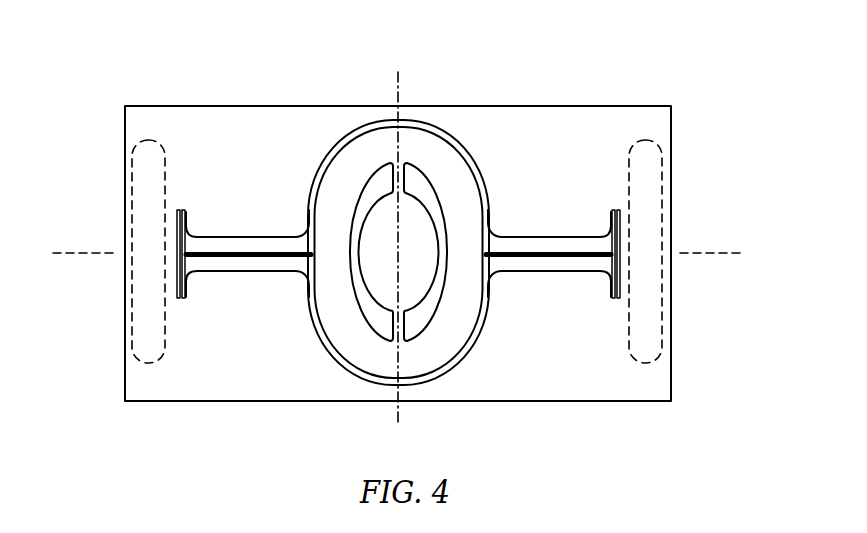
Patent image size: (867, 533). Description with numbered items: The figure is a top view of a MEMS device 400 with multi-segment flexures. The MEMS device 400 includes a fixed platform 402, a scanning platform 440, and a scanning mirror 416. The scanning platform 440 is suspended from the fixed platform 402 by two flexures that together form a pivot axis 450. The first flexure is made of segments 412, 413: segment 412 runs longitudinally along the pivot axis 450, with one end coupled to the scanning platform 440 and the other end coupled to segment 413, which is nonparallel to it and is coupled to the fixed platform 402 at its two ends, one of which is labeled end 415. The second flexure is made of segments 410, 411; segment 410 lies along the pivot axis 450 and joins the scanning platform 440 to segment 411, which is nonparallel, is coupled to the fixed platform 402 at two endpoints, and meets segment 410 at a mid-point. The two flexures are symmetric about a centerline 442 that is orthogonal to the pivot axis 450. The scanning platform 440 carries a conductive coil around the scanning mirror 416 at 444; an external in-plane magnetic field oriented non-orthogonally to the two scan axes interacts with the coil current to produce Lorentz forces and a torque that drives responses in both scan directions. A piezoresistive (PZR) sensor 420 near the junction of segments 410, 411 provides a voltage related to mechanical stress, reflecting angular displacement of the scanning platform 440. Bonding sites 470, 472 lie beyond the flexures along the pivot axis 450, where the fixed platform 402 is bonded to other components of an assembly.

The MEMS device 400 is at (80, 422).
The fixed platform 402 is at (243, 370).
The flexure segment 410 is at (231, 250).
The flexure segment 411 is at (192, 272).
The flexure segment 412 is at (562, 250).
The flexure segment 413 is at (578, 271).
The end of segment 413 415 is at (613, 298).
The scanning mirror 416 is at (391, 258).
The piezoresistive (PZR) sensor 420 is at (188, 247).
The scanning platform 440 is at (398, 252).
The centerline 442 is at (398, 88).
The conductive coil 444 is at (500, 362).
The pivot axis 450 is at (70, 255).
The bonding site 470 is at (133, 147).
The bonding site 472 is at (661, 147).